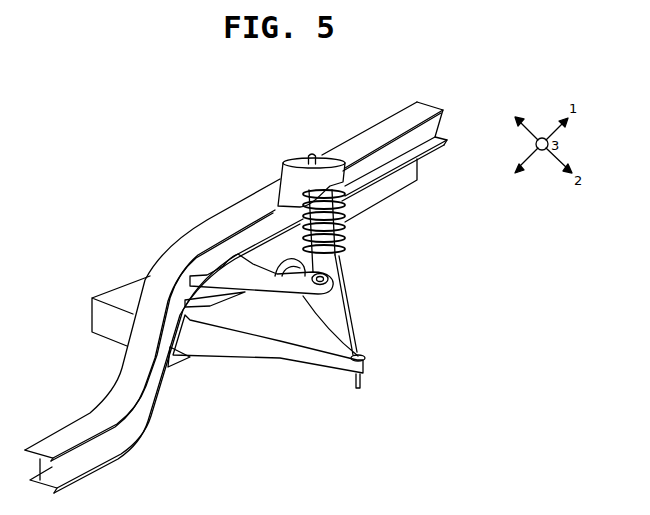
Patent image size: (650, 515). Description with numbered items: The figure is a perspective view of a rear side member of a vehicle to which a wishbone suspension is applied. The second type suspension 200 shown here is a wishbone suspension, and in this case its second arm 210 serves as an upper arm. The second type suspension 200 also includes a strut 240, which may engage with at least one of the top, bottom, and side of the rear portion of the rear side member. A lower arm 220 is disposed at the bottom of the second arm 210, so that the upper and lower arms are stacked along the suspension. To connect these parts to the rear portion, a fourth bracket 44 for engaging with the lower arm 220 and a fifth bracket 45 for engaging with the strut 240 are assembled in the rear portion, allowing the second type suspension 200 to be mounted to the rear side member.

The fourth bracket 44 is at (113, 302).
The fifth bracket 45 is at (285, 182).
The second type suspension 200 is at (347, 310).
The second arm 210 is at (232, 274).
The lower arm 220 is at (243, 345).
The strut 240 is at (340, 246).